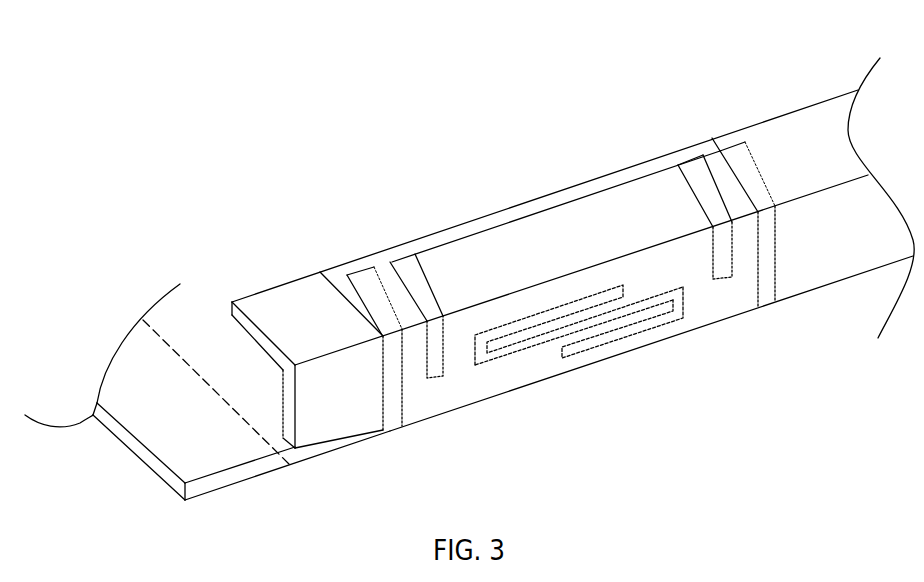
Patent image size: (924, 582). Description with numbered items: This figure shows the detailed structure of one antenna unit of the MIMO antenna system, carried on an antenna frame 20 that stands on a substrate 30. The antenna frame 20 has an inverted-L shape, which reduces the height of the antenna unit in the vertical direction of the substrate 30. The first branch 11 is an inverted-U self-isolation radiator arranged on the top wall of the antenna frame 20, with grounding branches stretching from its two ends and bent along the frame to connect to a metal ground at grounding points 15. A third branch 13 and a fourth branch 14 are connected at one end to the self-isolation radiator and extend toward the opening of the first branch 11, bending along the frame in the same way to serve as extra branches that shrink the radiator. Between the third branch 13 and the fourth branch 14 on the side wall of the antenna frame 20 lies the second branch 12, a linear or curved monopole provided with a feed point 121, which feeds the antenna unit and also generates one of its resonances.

The first branch 11 is at (422, 238).
The second branch 12 is at (548, 310).
The feed point 121 is at (562, 358).
The third branch 13 is at (437, 362).
The fourth branch 14 is at (722, 263).
The grounding point 15 is at (384, 432).
The antenna frame 20 is at (808, 232).
The substrate 30 is at (157, 395).